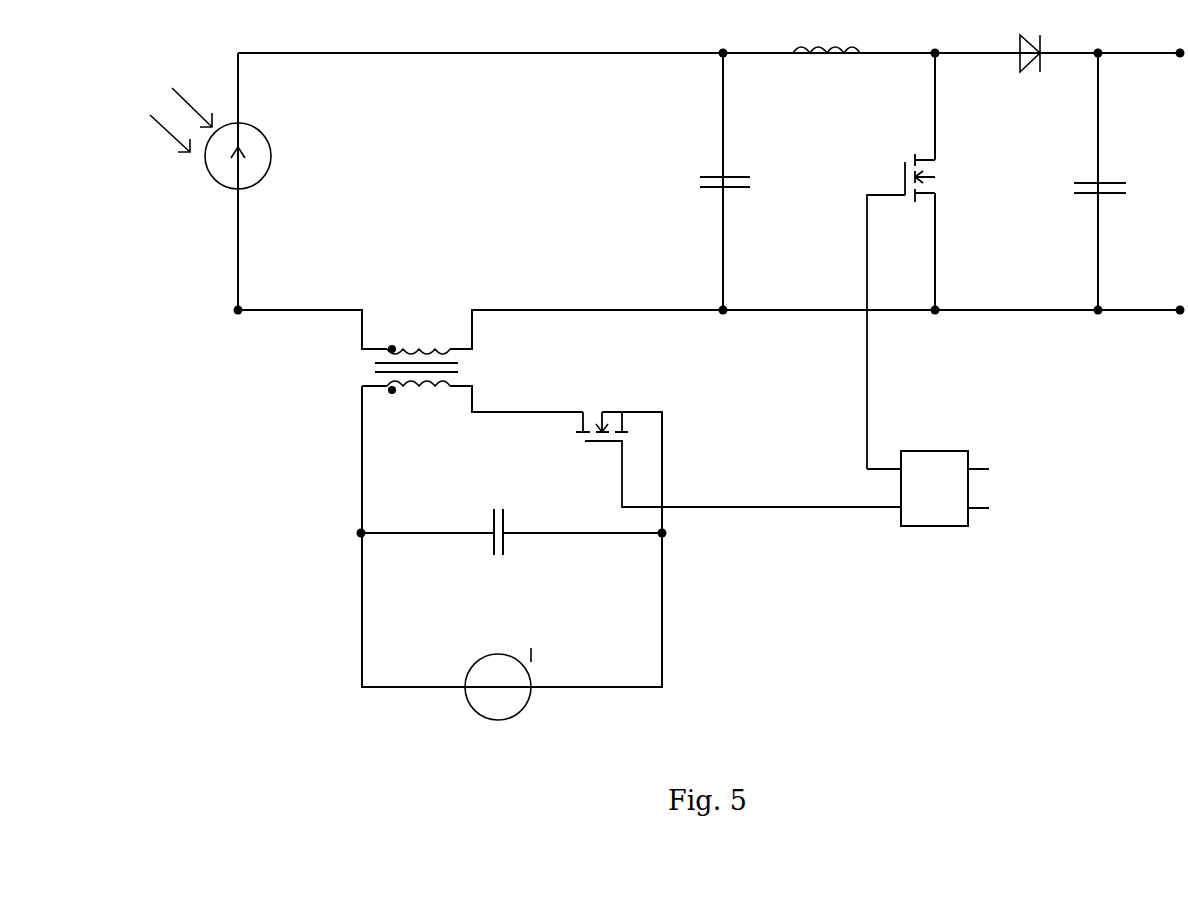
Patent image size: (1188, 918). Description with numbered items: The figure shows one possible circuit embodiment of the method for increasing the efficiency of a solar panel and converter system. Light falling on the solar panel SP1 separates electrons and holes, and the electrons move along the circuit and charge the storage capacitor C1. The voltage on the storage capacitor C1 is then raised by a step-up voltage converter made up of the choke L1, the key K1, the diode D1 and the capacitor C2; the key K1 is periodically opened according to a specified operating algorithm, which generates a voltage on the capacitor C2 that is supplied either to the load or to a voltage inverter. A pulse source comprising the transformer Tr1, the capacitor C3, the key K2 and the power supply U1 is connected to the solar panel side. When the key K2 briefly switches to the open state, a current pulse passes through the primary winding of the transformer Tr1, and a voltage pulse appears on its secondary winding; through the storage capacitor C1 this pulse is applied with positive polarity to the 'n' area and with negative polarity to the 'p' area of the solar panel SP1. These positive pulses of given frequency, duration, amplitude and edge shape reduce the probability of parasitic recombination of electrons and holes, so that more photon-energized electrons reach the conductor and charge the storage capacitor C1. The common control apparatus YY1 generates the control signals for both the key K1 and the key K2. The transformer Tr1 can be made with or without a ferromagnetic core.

The solar panel SP1 is at (236, 154).
The transformer Tr1 is at (490, 477).
The storage capacitor C1 is at (703, 183).
The choke L1 is at (826, 32).
The diode D1 is at (1028, 38).
The key K1 is at (923, 311).
The capacitor C2 is at (1120, 190).
The key K2 is at (738, 441).
The capacitor C3 is at (511, 516).
The power supply U1 is at (493, 668).
The common control apparatus YY1 is at (928, 470).